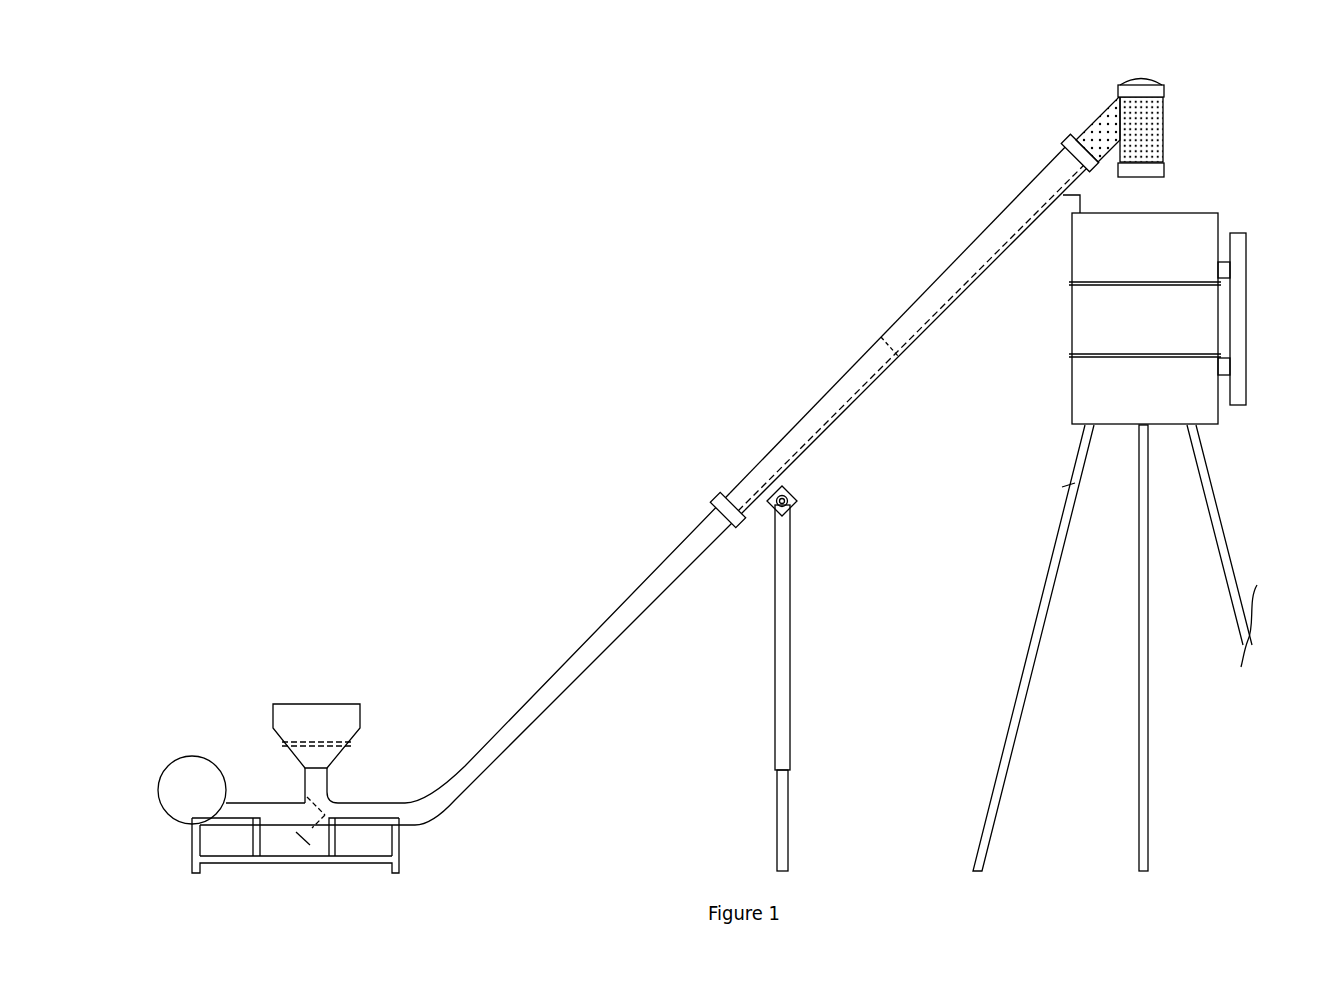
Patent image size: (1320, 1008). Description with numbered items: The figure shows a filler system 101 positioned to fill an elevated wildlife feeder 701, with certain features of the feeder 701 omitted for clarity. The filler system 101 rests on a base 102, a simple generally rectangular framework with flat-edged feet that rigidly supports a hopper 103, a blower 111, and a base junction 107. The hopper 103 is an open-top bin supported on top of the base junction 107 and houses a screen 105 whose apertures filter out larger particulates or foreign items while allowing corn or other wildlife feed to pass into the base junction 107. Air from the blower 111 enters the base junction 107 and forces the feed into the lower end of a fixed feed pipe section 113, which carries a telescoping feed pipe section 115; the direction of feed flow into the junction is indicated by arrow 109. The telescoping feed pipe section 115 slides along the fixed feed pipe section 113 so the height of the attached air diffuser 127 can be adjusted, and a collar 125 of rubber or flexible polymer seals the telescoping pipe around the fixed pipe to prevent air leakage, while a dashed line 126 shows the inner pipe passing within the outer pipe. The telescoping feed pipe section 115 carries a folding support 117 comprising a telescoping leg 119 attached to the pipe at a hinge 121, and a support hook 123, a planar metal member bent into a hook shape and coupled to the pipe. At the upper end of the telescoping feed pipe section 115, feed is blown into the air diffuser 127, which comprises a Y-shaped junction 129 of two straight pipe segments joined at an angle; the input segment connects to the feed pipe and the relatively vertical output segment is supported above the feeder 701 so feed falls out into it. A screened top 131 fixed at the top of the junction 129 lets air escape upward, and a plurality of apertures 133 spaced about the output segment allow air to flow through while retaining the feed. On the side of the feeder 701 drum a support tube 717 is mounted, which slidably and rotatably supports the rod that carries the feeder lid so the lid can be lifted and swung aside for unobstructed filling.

The filler system 101 is at (438, 443).
The base 102 is at (399, 860).
The hopper 103 is at (315, 725).
The screen 105 is at (353, 742).
The base junction 107 is at (317, 785).
The material flow direction 109 is at (342, 790).
The blower 111 is at (178, 777).
The fixed feed pipe section 113 is at (560, 690).
The telescoping feed pipe section 115 is at (1027, 200).
The folding support 117 is at (812, 664).
The telescoping leg 119 is at (783, 752).
The hinge 121 is at (797, 500).
The support hook 123 is at (1083, 207).
The collar 125 is at (726, 497).
The auger 126 is at (965, 291).
The air diffuser 127 is at (1216, 95).
The junction 129 is at (1090, 140).
The screened top 131 is at (1163, 90).
The apertures 133 is at (1155, 136).
The elevated wildlife feeder 701 is at (1229, 440).
The support tube 717 is at (1238, 318).